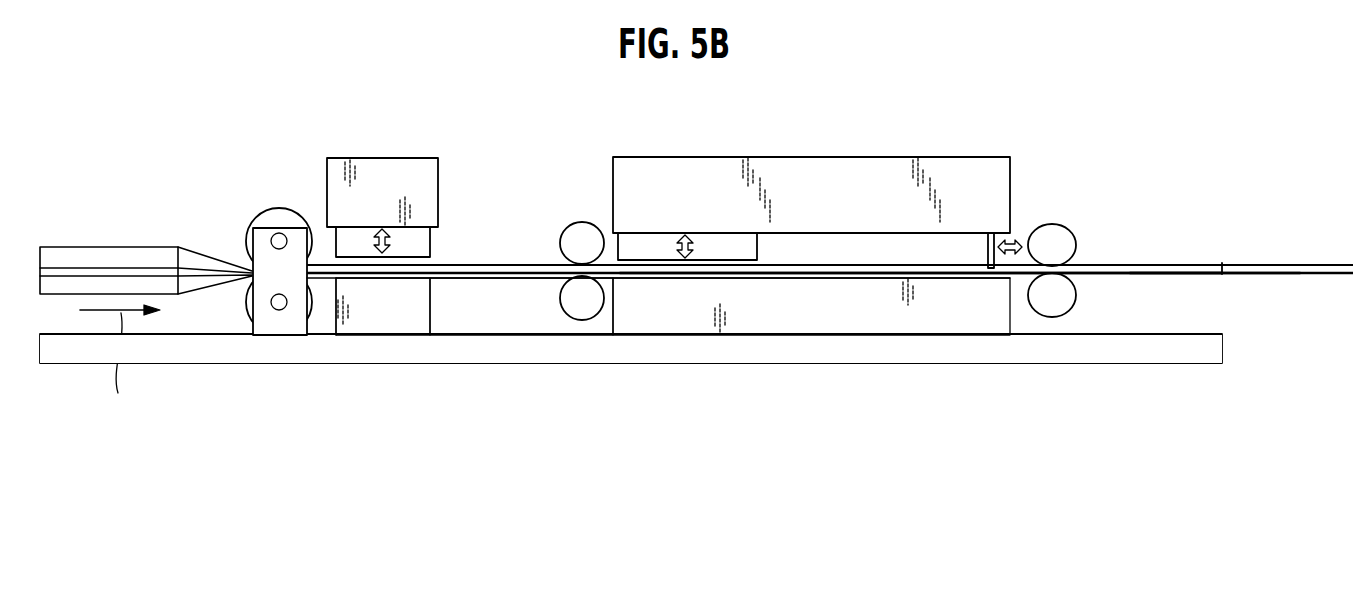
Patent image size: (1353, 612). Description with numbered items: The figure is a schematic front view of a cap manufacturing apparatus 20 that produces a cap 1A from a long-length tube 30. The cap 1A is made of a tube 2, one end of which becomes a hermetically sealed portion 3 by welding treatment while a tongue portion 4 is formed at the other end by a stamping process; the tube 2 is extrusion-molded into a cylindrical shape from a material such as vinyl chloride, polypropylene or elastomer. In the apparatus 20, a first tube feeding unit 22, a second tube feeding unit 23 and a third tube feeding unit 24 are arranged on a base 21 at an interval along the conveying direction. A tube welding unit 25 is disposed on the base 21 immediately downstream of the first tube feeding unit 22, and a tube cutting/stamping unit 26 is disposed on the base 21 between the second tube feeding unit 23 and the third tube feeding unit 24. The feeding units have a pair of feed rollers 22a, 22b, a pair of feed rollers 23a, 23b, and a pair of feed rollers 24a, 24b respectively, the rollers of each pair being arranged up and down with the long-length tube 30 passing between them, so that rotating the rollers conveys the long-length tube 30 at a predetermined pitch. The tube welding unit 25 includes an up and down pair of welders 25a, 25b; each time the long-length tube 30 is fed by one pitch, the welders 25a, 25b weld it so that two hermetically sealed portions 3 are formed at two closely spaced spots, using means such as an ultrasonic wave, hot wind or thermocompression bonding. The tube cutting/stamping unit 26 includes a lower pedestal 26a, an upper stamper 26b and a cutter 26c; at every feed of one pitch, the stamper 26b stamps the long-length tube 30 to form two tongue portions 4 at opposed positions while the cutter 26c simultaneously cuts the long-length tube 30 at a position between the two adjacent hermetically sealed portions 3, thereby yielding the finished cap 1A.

The cap manufacturing apparatus 20 is at (182, 118).
The long-length tube 30 is at (93, 265).
The cap 1A is at (1203, 245).
The tube 2 is at (1185, 276).
The hermetically sealed portion 3 is at (962, 273).
The tongue portion 4 is at (678, 279).
The base 21 is at (577, 348).
The first tube feeding unit 22 is at (277, 192).
The feed roller 22a is at (247, 236).
The feed roller 22b is at (238, 318).
The second tube feeding unit 23 is at (574, 201).
The feed roller 23a is at (565, 247).
The feed roller 23b is at (565, 300).
The third tube feeding unit 24 is at (1046, 208).
The feed roller 24a is at (1065, 245).
The feed roller 24b is at (1065, 297).
The tube welding unit 25 is at (378, 136).
The welder 25a is at (420, 238).
The welder 25b is at (415, 306).
The tube cutting/stamping unit 26 is at (818, 136).
The lower pedestal 26a is at (803, 315).
The upper stamper 26b is at (715, 240).
The cutter 26c is at (983, 237).